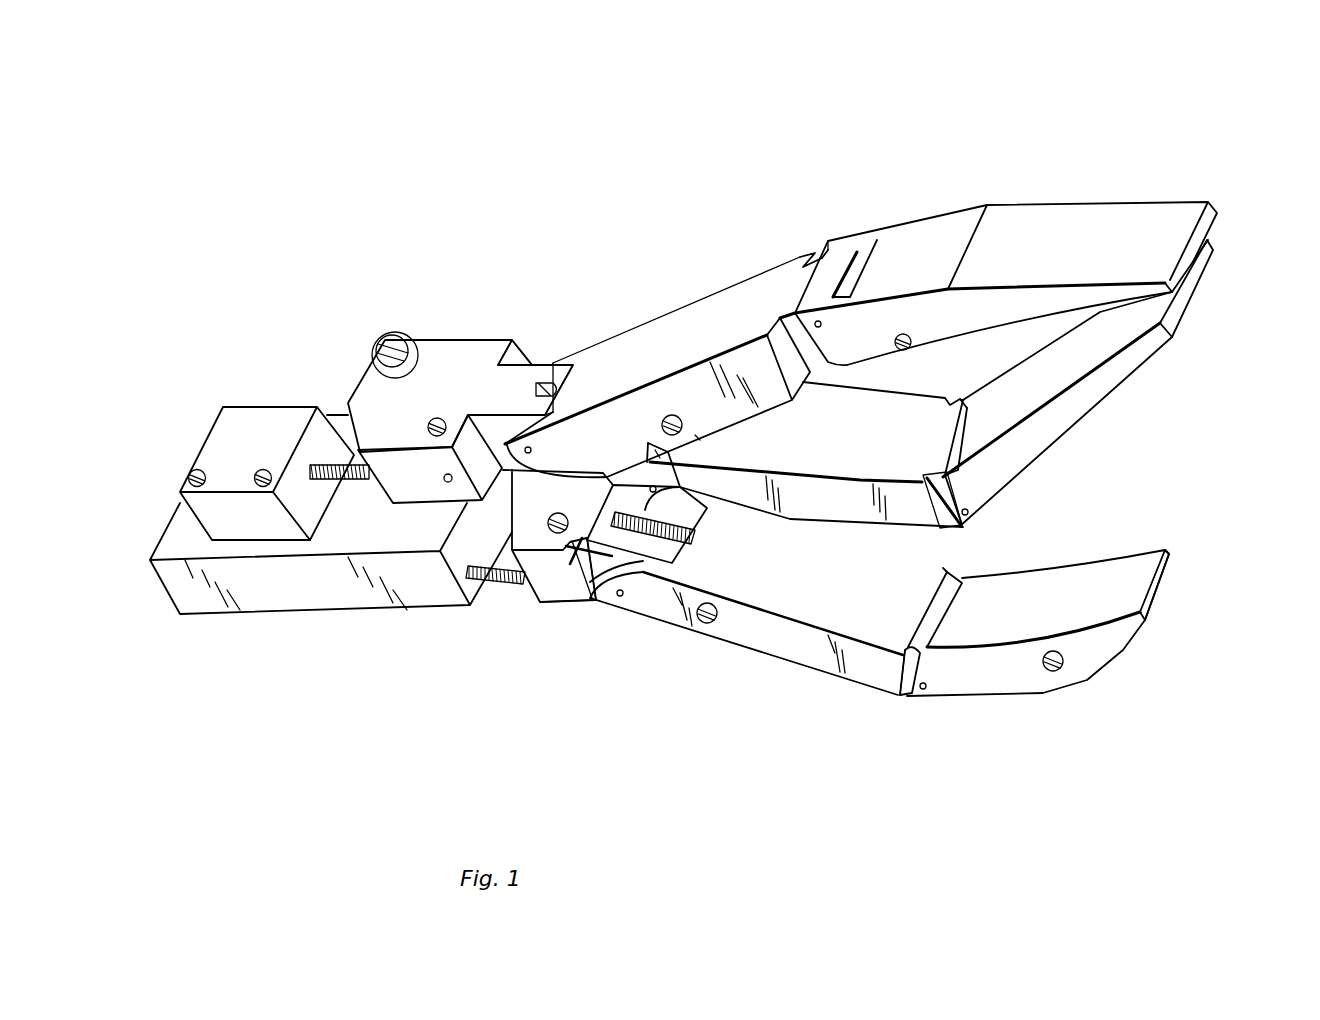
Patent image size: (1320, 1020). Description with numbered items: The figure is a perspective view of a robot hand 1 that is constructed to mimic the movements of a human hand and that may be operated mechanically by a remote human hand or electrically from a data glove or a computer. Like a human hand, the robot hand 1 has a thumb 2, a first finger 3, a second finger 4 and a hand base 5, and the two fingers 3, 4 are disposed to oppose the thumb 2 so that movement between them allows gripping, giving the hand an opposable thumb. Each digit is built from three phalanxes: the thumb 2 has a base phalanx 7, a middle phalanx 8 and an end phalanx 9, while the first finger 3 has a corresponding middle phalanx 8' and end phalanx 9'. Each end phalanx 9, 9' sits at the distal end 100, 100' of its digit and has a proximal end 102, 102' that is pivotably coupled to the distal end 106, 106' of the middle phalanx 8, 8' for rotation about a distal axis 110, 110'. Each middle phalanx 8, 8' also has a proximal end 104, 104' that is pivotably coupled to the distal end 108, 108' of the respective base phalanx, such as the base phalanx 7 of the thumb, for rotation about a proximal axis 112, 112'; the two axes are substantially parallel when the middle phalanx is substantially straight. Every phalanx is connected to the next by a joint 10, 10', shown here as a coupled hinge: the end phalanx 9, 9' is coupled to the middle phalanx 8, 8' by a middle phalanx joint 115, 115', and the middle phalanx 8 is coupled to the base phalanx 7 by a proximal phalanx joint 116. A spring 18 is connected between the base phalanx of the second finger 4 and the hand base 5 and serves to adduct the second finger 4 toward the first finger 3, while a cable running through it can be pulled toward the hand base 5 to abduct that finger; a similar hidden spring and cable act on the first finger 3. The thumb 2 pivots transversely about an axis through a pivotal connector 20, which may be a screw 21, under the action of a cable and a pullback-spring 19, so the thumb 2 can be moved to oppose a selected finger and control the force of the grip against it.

The robot hand 1 is at (398, 132).
The thumb 2 is at (737, 257).
The first finger 3 is at (1110, 452).
The second finger 4 is at (1097, 697).
The hand base 5 is at (355, 623).
The base phalanx 7 is at (460, 375).
The middle phalanx 8 is at (657, 364).
The middle phalanx 8' is at (804, 469).
The end phalanx 9 is at (1051, 255).
The end phalanx 9' is at (1057, 409).
The joint 10 is at (517, 330).
The groove 10' is at (927, 480).
The spring 18 is at (510, 580).
The pullback-spring 19 is at (357, 480).
The pivotal connector 20 is at (378, 330).
The screw 21 is at (373, 355).
The distal end 100 is at (1253, 232).
The distal end 100' is at (1228, 288).
The proximal end 102 is at (976, 273).
The proximal end 102' is at (1002, 474).
The proximal end 104 is at (568, 353).
The proximal end 104' is at (631, 369).
The distal end 106 is at (785, 237).
The distal end 106' is at (925, 384).
The distal end 108 is at (513, 356).
The distal end 108' is at (669, 351).
The distal axis 110 is at (857, 324).
The distal axis 110' is at (997, 482).
The proximal axis 112 is at (569, 444).
The proximal axis 112' is at (701, 484).
The middle phalanx joint 115 is at (810, 202).
The middle phalanx joint 115' is at (1104, 383).
The proximal phalanx joint 116 is at (548, 329).